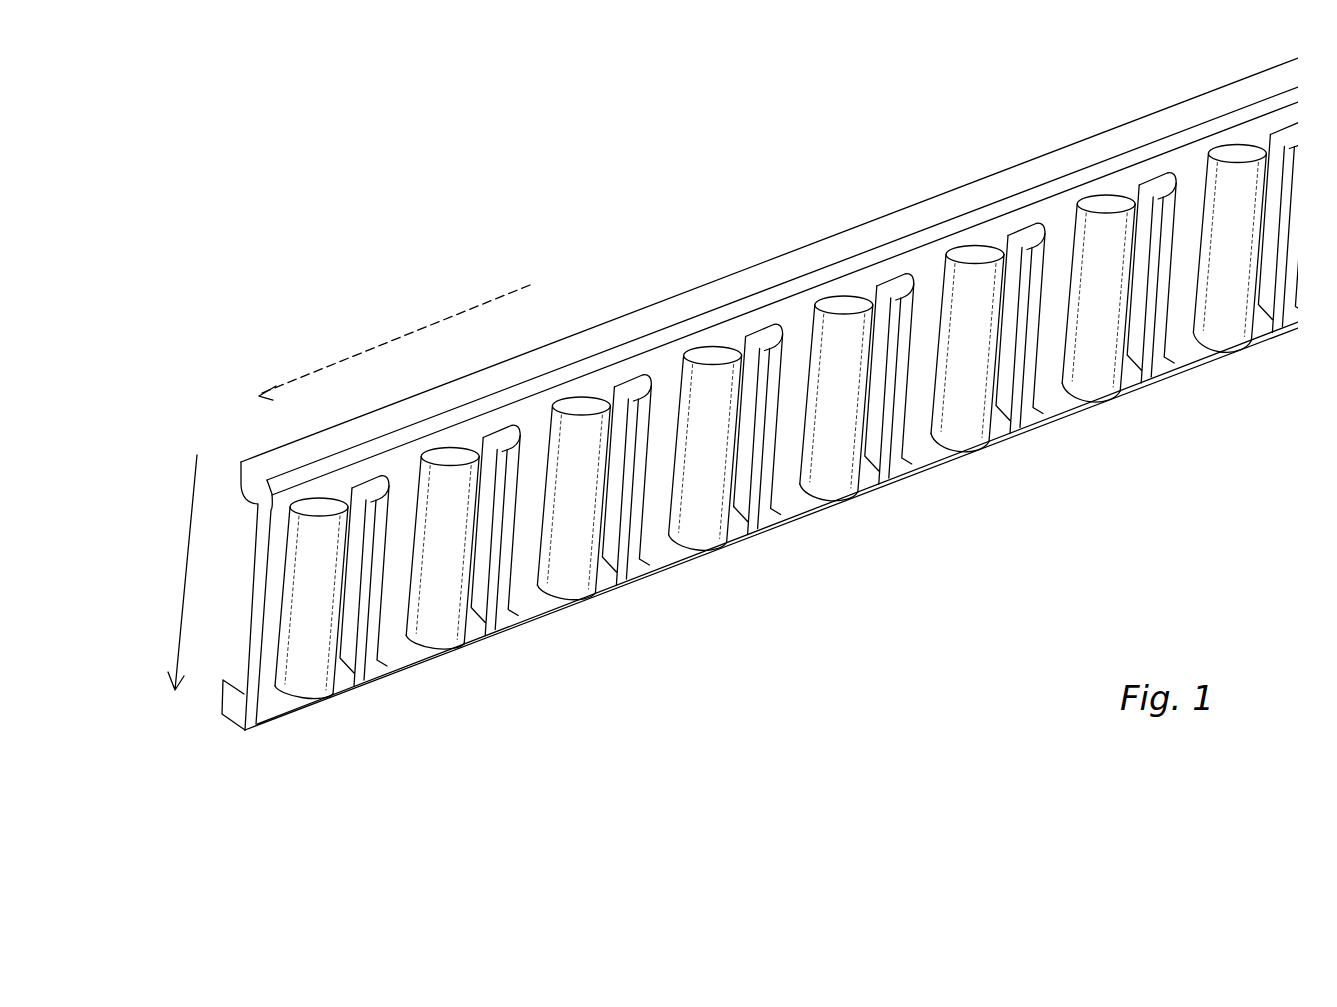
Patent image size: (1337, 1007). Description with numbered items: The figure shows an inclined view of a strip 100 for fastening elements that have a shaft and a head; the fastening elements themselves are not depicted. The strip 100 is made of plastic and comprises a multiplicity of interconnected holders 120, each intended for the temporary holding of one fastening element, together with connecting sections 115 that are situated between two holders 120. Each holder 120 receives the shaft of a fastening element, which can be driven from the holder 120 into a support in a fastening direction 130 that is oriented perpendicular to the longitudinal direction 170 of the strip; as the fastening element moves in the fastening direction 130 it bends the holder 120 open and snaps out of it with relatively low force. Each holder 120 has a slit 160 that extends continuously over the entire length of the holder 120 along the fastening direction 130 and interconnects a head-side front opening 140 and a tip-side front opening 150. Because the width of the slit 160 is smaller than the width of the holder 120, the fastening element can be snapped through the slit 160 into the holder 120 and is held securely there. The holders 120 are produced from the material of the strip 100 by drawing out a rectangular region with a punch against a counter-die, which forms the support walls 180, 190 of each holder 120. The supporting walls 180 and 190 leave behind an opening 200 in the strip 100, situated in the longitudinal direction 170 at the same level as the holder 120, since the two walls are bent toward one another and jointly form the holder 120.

The strip 100 is at (417, 165).
The connecting section 115 is at (800, 357).
The holder 120 is at (718, 347).
The fastening direction 130 is at (197, 455).
The head-side front opening 140 is at (758, 341).
The tip-side front opening 150 is at (733, 547).
The slit 160 is at (742, 495).
The longitudinal direction 170 is at (342, 362).
The support wall 180 is at (700, 527).
The support wall 190 is at (768, 470).
The opening 200 is at (736, 341).